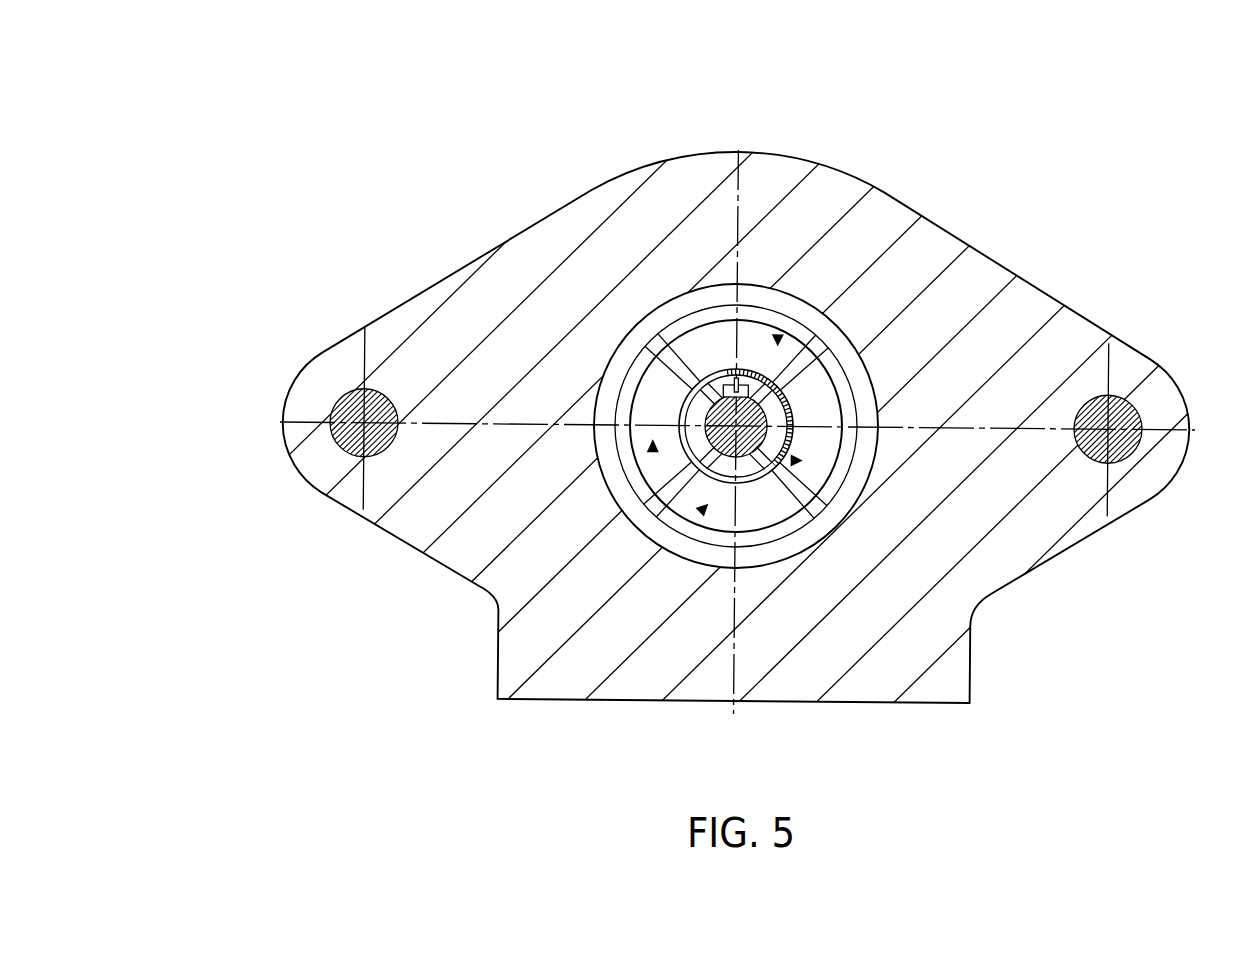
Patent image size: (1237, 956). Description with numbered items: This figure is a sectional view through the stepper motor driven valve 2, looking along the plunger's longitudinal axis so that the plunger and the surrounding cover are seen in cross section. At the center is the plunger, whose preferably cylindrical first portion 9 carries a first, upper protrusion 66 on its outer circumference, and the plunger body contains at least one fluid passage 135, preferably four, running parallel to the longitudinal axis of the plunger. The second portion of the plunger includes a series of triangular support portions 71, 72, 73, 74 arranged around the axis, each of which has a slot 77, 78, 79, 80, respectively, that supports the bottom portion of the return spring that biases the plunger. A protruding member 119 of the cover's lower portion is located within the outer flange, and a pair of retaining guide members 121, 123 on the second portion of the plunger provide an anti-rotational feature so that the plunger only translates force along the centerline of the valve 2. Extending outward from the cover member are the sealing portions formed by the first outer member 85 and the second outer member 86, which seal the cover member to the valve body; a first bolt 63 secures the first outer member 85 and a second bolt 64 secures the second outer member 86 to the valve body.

The valve 2 is at (1090, 212).
The first portion 9 is at (708, 308).
The first bolt 63 is at (350, 415).
The second bolt 64 is at (1122, 413).
The first, upper protrusion 66 is at (803, 385).
The triangular support portion 71 is at (695, 465).
The triangular support portion 72 is at (636, 360).
The triangular support portion 73 is at (788, 470).
The triangular support portion 74 is at (792, 367).
The slot 77 is at (655, 350).
The slot 78 is at (640, 300).
The slot 79 is at (783, 388).
The slot 80 is at (790, 469).
The first outer member 85 is at (479, 468).
The second outer member 86 is at (949, 462).
The protruding member 119 is at (737, 378).
The retaining guide member 121 is at (677, 337).
The retaining guide member 123 is at (752, 383).
The fluid passage 135 is at (779, 338).